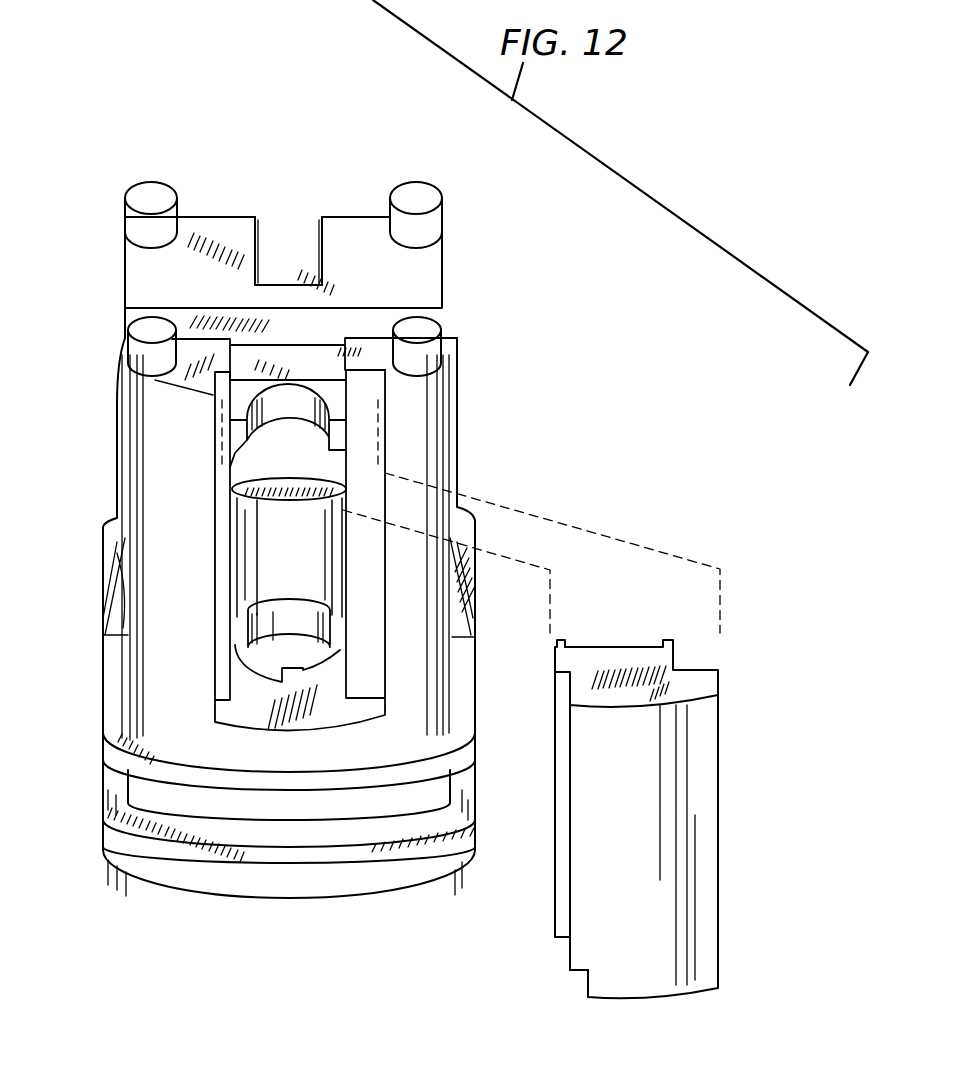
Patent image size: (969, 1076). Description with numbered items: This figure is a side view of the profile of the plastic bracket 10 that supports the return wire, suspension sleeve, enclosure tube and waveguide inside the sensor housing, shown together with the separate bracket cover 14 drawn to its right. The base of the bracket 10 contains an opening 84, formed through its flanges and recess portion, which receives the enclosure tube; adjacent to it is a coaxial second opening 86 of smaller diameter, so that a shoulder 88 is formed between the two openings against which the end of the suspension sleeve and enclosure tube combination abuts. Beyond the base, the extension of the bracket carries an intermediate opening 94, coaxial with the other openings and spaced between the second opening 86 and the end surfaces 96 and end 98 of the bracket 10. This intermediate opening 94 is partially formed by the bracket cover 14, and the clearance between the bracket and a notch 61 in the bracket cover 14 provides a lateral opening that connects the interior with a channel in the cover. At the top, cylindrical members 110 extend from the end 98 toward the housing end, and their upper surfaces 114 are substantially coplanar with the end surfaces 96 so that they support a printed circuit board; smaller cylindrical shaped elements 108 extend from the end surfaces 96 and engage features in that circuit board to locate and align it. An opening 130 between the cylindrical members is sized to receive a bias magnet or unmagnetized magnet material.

The bracket 10 is at (412, 452).
The bracket cover 14 is at (697, 767).
The notch 61 is at (588, 985).
The opening 84 is at (283, 662).
The second opening 86 is at (280, 623).
The shoulder 88 is at (307, 635).
The intermediate opening 94 is at (280, 403).
The end surface 96 is at (183, 375).
The end 98 is at (215, 285).
The cylindrical shaped elements 108 is at (140, 352).
The cylindrical member 110 is at (138, 228).
The upper surface 114 is at (143, 196).
The opening 130 is at (258, 243).